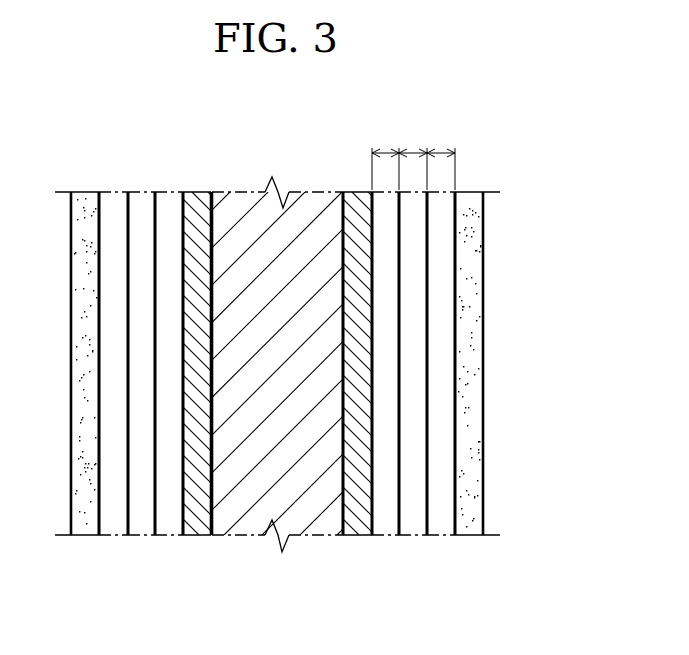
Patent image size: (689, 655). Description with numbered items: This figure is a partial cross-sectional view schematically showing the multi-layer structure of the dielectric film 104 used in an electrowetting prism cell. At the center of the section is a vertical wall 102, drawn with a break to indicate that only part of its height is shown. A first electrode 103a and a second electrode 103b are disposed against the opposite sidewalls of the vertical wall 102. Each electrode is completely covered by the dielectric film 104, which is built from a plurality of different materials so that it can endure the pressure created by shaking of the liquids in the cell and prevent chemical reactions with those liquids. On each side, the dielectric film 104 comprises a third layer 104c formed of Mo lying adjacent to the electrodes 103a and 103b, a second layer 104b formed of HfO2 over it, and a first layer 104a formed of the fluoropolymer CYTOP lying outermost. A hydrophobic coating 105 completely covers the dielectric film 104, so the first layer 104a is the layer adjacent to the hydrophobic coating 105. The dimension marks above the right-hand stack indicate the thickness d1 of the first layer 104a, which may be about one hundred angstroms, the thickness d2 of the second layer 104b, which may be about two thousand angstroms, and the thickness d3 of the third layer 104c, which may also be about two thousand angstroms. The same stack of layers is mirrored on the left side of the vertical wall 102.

The vertical wall 102 is at (312, 205).
The first electrode 103a is at (362, 205).
The second electrode 103b is at (197, 205).
The dielectric film 104 is at (280, 411).
The first layer 104a is at (118, 535).
The second layer 104b is at (142, 535).
The third layer 104c is at (329, 390).
The hydrophobic coating 105 is at (85, 205).
The thickness of the first layer d1 is at (385, 154).
The thickness of the second layer d2 is at (413, 154).
The thickness of the third layer d3 is at (441, 154).